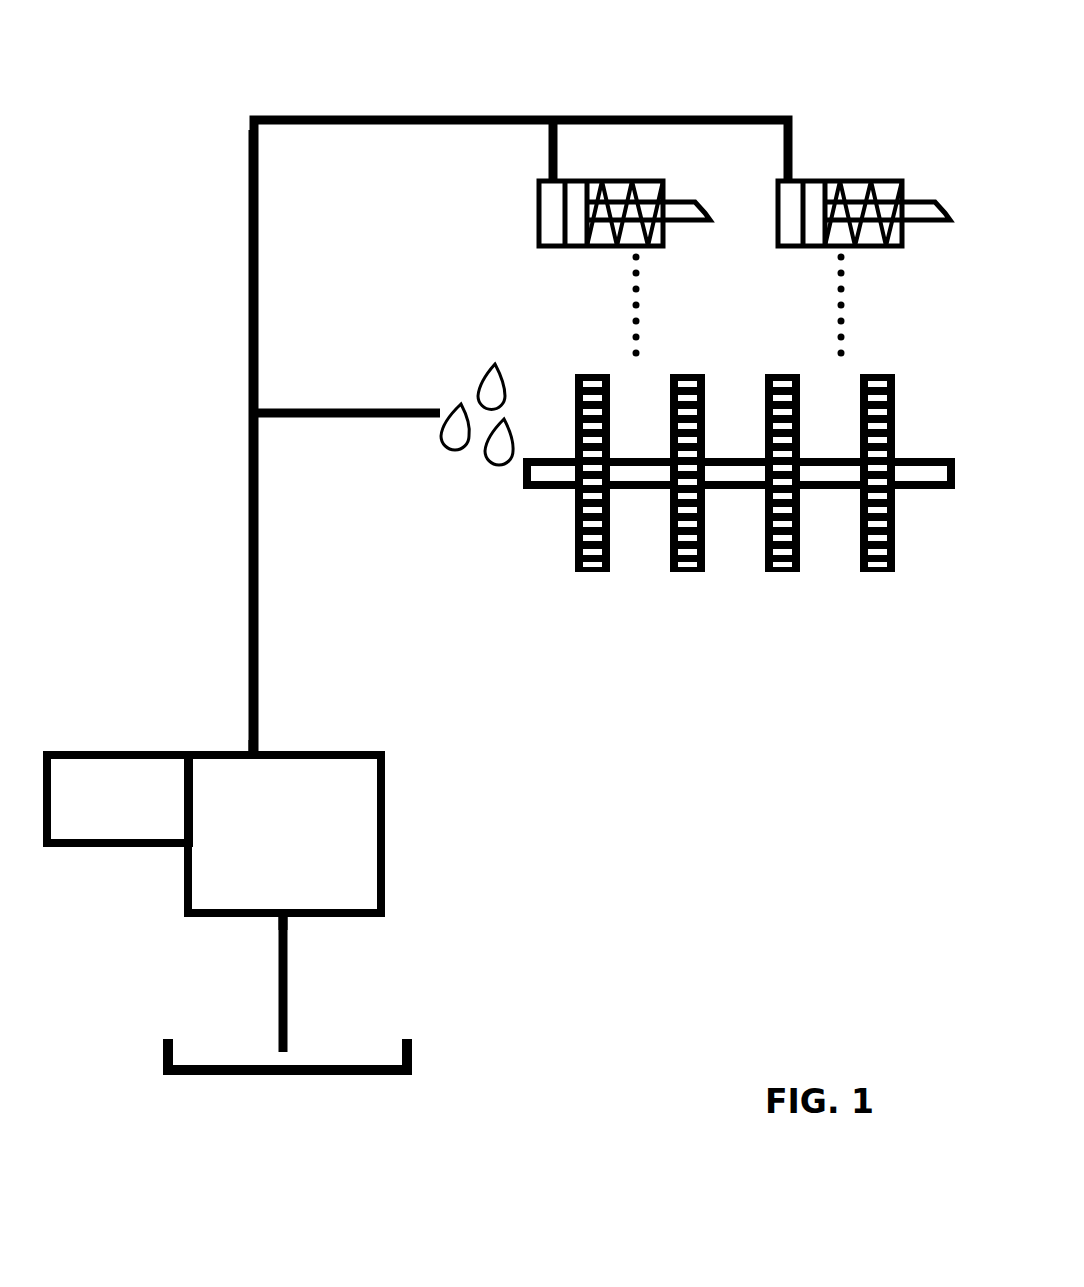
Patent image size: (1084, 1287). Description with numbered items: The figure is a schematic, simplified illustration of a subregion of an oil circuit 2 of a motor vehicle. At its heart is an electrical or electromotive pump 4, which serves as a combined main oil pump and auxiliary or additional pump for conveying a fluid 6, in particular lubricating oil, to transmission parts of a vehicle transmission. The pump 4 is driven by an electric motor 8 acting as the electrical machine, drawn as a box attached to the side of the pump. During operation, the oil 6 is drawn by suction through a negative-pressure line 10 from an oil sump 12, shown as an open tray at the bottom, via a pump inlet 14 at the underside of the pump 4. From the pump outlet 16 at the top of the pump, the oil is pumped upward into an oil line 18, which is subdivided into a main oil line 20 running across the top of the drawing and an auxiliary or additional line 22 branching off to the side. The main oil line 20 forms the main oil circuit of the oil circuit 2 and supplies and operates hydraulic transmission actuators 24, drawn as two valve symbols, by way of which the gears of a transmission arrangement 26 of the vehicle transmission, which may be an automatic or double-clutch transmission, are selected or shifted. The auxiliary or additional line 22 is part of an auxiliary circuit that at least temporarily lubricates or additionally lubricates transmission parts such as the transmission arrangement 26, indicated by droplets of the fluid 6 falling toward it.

The oil circuit 2 is at (614, 718).
The pump 4 is at (284, 834).
The fluid 6 is at (466, 466).
The electric motor 8 is at (118, 799).
The negative-pressure line 10 is at (280, 1000).
The oil sump 12 is at (335, 1076).
The inlet 14 is at (286, 918).
The outlet 16 is at (259, 752).
The oil line 18 is at (249, 585).
The main oil line 20 is at (388, 116).
The auxiliary or additional line 22 is at (360, 408).
The hydraulic transmission actuators 24 is at (616, 181).
The transmission arrangement 26 is at (922, 490).